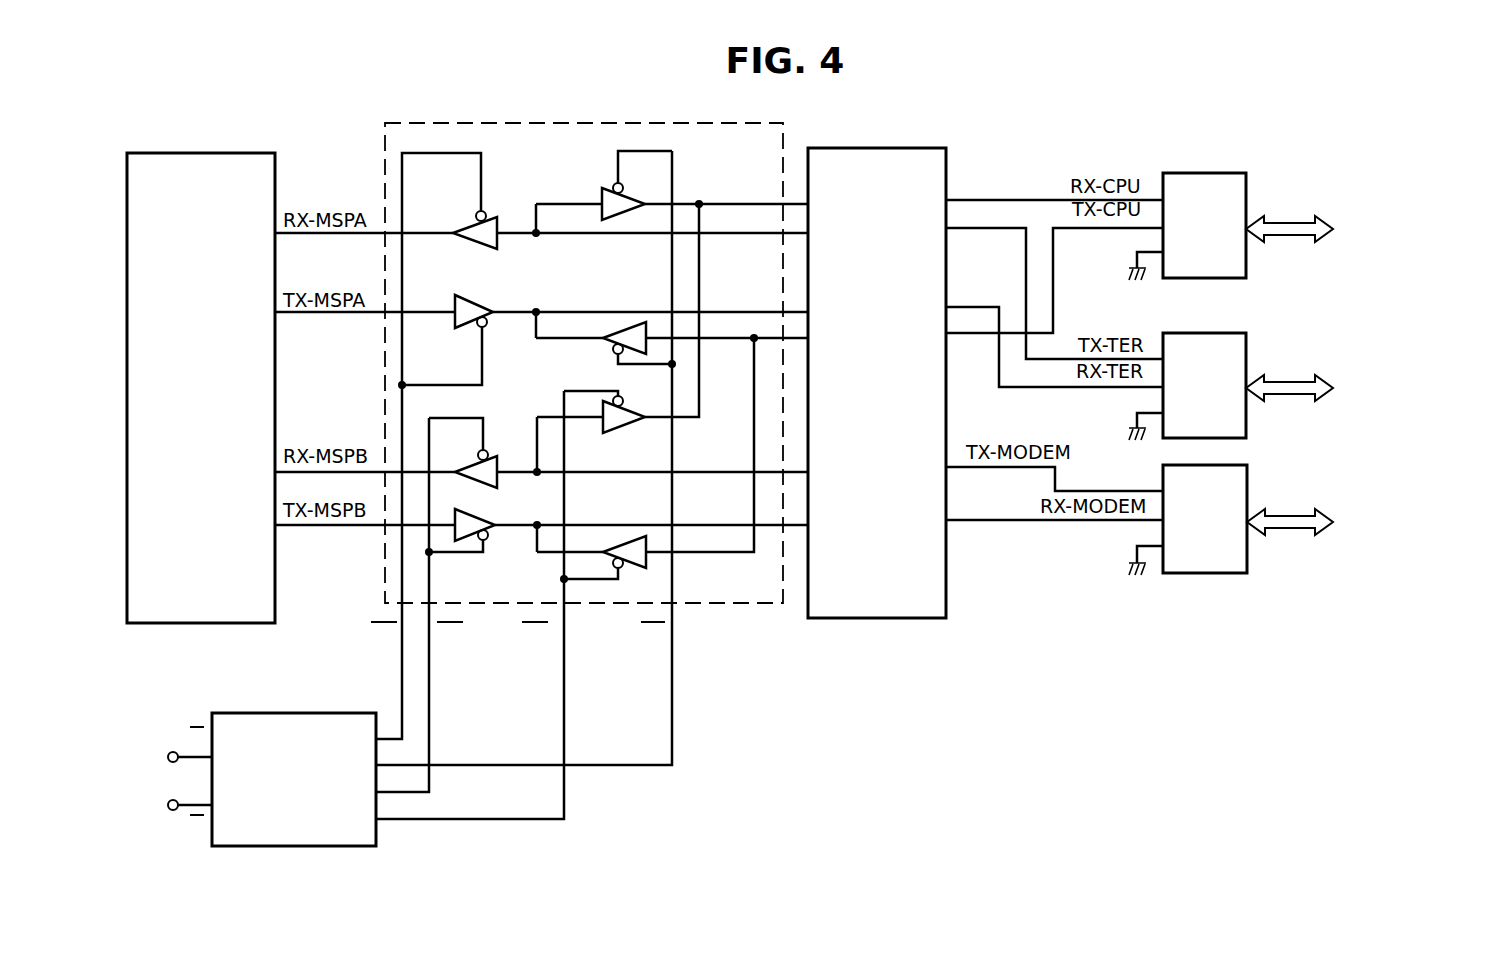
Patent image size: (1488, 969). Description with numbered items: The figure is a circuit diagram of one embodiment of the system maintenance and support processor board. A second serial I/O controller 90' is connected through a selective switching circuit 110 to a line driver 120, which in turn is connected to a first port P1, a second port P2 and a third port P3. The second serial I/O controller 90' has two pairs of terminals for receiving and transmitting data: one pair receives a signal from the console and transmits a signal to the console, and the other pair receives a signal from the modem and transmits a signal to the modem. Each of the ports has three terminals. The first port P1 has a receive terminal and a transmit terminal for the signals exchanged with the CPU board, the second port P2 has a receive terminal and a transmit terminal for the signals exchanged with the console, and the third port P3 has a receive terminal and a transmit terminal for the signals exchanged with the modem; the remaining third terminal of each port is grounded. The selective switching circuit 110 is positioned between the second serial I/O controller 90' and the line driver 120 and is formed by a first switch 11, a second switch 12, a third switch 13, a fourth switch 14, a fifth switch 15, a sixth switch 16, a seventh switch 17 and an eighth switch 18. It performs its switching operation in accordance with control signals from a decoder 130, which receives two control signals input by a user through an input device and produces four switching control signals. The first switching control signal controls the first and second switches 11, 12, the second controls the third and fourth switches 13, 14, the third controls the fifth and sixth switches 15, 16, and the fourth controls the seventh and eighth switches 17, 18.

The second serial I/O controller 90' is at (235, 388).
The selective switching circuit 110 is at (740, 603).
The first switch 11 is at (470, 245).
The second switch 12 is at (455, 328).
The third switch 13 is at (601, 198).
The fourth switch 14 is at (604, 344).
The fifth switch 15 is at (497, 460).
The sixth switch 16 is at (494, 528).
The seventh switch 17 is at (636, 425).
The eighth switch 18 is at (639, 566).
The line driver 120 is at (946, 177).
The decoder 130 is at (320, 713).
The first port P1 is at (1246, 199).
The second port P2 is at (1246, 361).
The third port P3 is at (1247, 493).